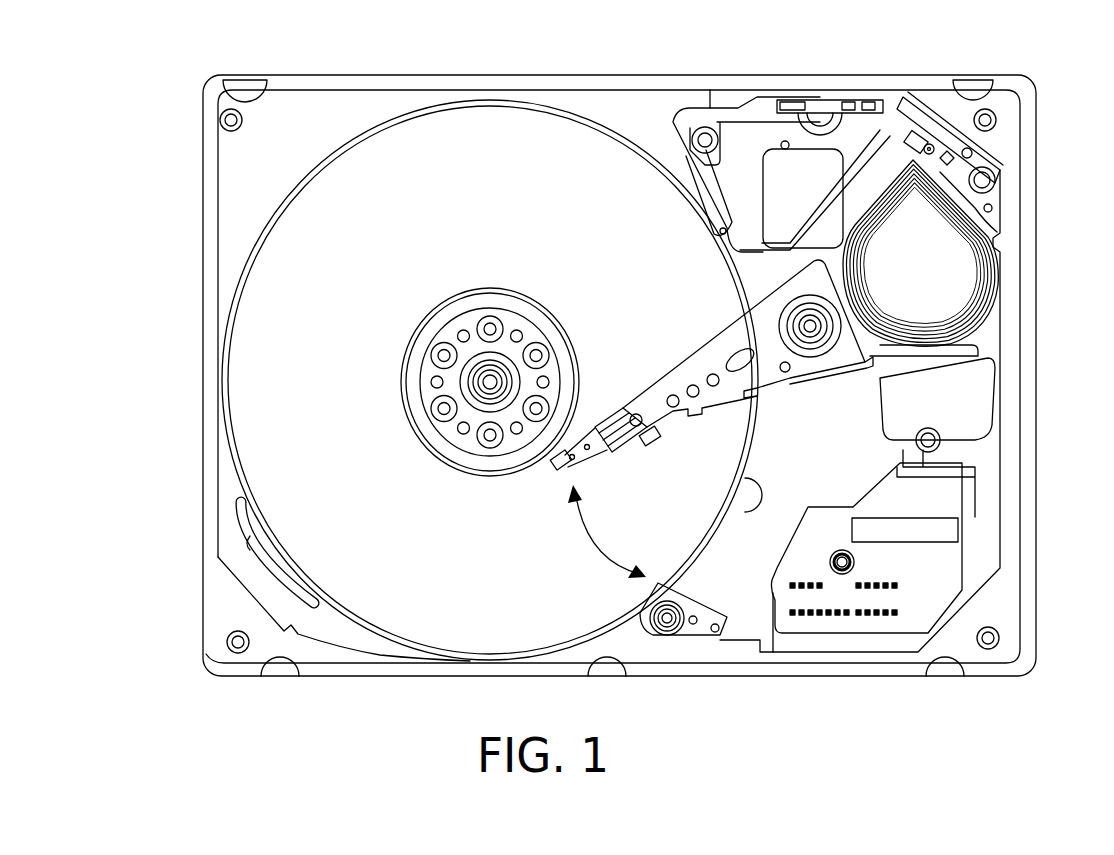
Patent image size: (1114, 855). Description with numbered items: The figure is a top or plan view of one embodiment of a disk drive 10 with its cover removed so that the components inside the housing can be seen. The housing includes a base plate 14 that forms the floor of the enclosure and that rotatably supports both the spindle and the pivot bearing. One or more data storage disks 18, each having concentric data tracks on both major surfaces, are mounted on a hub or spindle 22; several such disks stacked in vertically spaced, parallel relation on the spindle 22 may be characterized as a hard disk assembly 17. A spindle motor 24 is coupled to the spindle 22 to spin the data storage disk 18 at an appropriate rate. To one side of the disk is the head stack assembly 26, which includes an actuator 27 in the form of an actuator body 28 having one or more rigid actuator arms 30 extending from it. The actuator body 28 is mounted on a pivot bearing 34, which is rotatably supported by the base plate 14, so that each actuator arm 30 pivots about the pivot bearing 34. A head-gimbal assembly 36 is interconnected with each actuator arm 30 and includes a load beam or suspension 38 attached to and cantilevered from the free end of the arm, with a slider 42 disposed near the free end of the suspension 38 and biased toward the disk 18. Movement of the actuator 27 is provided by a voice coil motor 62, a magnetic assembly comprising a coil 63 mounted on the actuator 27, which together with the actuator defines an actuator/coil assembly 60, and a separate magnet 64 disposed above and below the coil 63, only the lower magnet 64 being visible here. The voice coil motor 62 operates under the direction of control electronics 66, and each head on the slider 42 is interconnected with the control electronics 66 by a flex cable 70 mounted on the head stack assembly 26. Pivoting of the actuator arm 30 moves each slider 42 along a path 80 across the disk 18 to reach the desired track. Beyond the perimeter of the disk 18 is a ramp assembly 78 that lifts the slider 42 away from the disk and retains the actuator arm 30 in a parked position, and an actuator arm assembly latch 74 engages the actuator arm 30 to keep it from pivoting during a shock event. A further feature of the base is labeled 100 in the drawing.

The disk drive 10 is at (178, 156).
The base plate 14 is at (366, 76).
The hard disk assembly 17 is at (318, 610).
The data storage disk 18 is at (513, 122).
The spindle 22 is at (545, 300).
The spindle motor 24 is at (475, 365).
The head stack assembly 26 is at (688, 356).
The actuator 27 is at (808, 402).
The actuator body 28 is at (800, 283).
The actuator arm 30 is at (673, 420).
The pivot bearing 34 is at (808, 345).
The head-gimbal assembly 36 is at (621, 472).
The suspension 38 is at (590, 425).
The slider 42 is at (560, 466).
The actuator/coil assembly 60 is at (830, 180).
The voice coil motor 62 is at (780, 214).
The coil 63 is at (1000, 250).
The magnet 64 is at (803, 196).
The control electronics 66 is at (845, 636).
The flex cable 70 is at (845, 455).
The actuator arm assembly latch 74 is at (910, 106).
The ramp assembly 78 is at (672, 640).
The path 80 is at (610, 560).
The base deck portion 100 is at (930, 358).